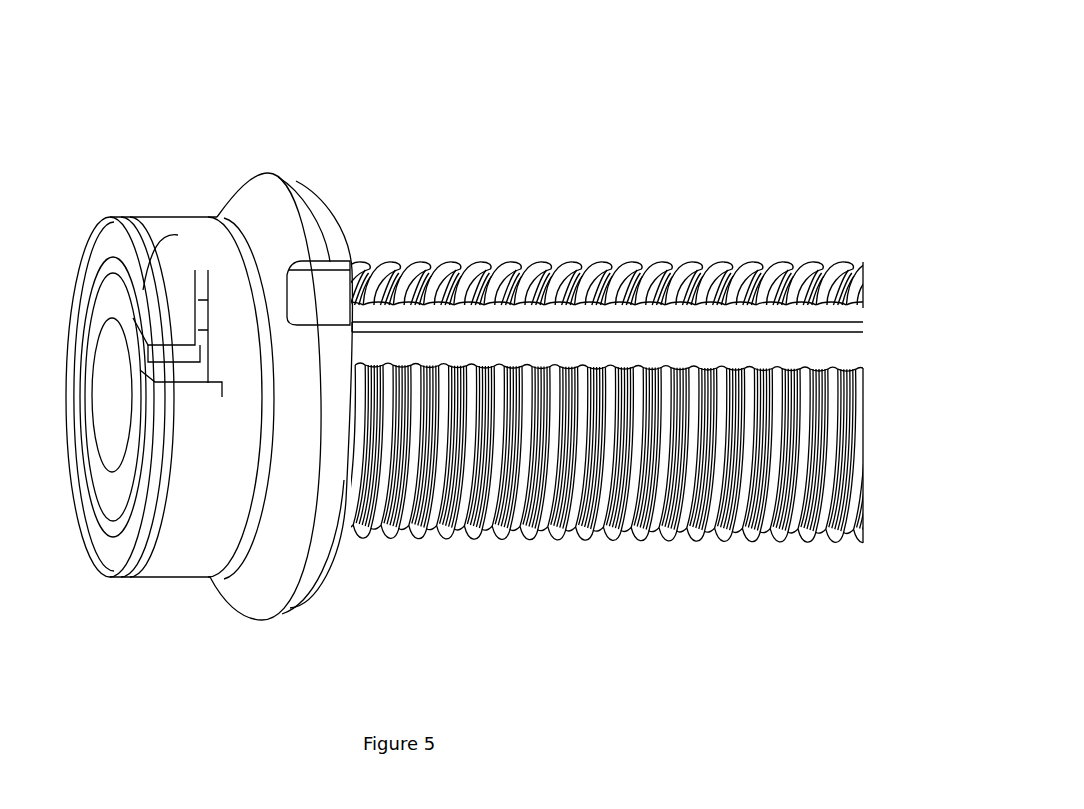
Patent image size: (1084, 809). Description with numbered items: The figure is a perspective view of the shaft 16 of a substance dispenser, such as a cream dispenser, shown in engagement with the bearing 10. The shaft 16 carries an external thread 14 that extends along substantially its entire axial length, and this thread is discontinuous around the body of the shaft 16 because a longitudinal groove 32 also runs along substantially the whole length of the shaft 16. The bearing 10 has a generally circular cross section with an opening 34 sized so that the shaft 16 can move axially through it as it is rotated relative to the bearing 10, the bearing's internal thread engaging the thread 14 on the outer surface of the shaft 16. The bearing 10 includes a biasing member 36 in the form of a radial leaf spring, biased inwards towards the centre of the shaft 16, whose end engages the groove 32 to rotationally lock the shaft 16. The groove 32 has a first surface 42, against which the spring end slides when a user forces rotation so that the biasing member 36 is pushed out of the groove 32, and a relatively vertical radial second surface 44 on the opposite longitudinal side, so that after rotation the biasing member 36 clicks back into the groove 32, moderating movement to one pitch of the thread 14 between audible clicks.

The bearing 10 is at (290, 180).
The external thread 14 is at (418, 437).
The shaft 16 is at (578, 228).
The longitudinal groove 32 is at (700, 395).
The opening 34 is at (119, 390).
The biasing member 36 is at (173, 302).
The first surface 42 is at (531, 420).
The second surface 44 is at (465, 303).